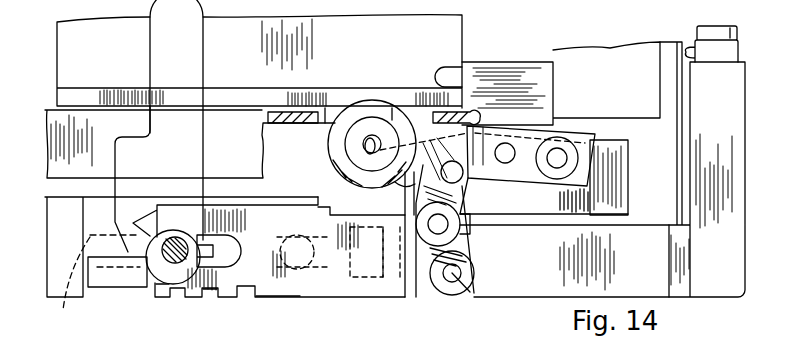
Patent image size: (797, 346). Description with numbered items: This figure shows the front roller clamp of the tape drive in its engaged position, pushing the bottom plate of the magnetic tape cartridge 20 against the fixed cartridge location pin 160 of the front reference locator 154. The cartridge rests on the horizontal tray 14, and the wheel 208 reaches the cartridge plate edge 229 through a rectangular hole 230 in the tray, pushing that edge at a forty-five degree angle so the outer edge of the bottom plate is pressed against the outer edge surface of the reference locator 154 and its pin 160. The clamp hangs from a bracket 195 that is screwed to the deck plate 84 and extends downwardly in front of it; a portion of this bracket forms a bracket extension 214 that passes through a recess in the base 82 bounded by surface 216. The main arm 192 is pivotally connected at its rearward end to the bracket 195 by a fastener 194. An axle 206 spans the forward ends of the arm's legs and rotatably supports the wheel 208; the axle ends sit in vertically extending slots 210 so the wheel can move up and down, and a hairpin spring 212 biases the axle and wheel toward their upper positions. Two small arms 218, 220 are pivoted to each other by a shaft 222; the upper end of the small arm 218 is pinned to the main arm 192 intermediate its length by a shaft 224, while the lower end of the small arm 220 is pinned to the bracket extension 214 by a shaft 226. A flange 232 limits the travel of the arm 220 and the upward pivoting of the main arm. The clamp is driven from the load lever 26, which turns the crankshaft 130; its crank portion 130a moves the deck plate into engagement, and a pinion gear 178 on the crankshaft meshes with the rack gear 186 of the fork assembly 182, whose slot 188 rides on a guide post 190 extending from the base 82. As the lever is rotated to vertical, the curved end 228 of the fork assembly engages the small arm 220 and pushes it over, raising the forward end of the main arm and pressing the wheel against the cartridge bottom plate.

The horizontal tray 14 is at (265, 112).
The magnetic tape cartridge 20 is at (462, 31).
The load lever 26 is at (151, 43).
The base 82 is at (684, 284).
The deck plate 84 is at (665, 139).
The crankshaft 130 is at (178, 240).
The crank portion 130a is at (95, 284).
The front reference locator 154 is at (515, 53).
The cartridge location pin 160 is at (443, 70).
The pinion gear 178 is at (204, 292).
The fork assembly 182 is at (283, 294).
The rack gear 186 is at (163, 295).
The slot 188 is at (239, 258).
The guide post 190 is at (300, 243).
The main arm 192 is at (560, 130).
The fastener 194 is at (562, 150).
The bracket 195 is at (618, 178).
The axle 206 is at (364, 150).
The wheel 208 is at (375, 108).
The vertically extending slot 210 is at (363, 142).
The hairpin spring 212 is at (398, 185).
The bracket extension 214 is at (423, 293).
The surface 216 is at (606, 261).
The small arm 218 is at (486, 200).
The small arm 220 is at (467, 248).
The shaft 222 is at (430, 222).
The shaft 224 is at (459, 176).
The shaft 226 is at (455, 278).
The curved end 228 is at (410, 267).
The edge 229 is at (393, 108).
The rectangular hole 230 is at (326, 110).
The flange 232 is at (471, 232).